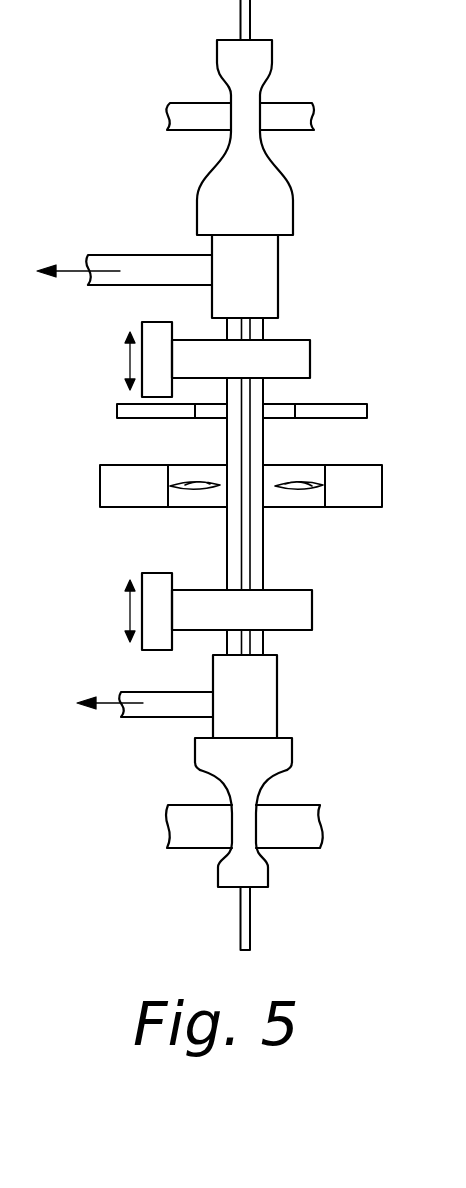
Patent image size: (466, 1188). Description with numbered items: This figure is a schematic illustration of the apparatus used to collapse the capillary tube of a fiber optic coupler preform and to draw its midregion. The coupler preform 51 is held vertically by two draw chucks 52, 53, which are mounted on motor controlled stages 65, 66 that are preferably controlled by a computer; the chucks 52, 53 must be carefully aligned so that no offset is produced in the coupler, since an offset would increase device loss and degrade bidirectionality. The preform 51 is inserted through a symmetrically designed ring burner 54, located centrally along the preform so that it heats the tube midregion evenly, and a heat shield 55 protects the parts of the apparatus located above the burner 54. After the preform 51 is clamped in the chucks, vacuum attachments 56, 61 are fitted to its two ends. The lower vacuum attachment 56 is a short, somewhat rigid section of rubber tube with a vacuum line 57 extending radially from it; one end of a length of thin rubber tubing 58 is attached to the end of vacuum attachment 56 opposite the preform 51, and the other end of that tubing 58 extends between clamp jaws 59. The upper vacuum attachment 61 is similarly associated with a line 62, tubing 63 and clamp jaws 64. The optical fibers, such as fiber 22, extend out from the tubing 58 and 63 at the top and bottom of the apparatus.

The fiber 22 is at (262, 13).
The coupler preform 51 is at (264, 547).
The chuck 52 is at (310, 355).
The chuck 53 is at (312, 604).
The ring burner 54 is at (337, 465).
The heat shield 55 is at (338, 404).
The vacuum attachment 56 is at (270, 691).
The vacuum line 57 is at (147, 718).
The thin rubber tubing 58 is at (282, 760).
The clamp jaws 59 is at (322, 828).
The upper vacuum attachment 61 is at (268, 275).
The line 62 is at (143, 255).
The tubing 63 is at (277, 196).
The clamp jaws 64 is at (168, 117).
The motor controlled stage 65 is at (143, 328).
The motor controlled stage 66 is at (158, 575).